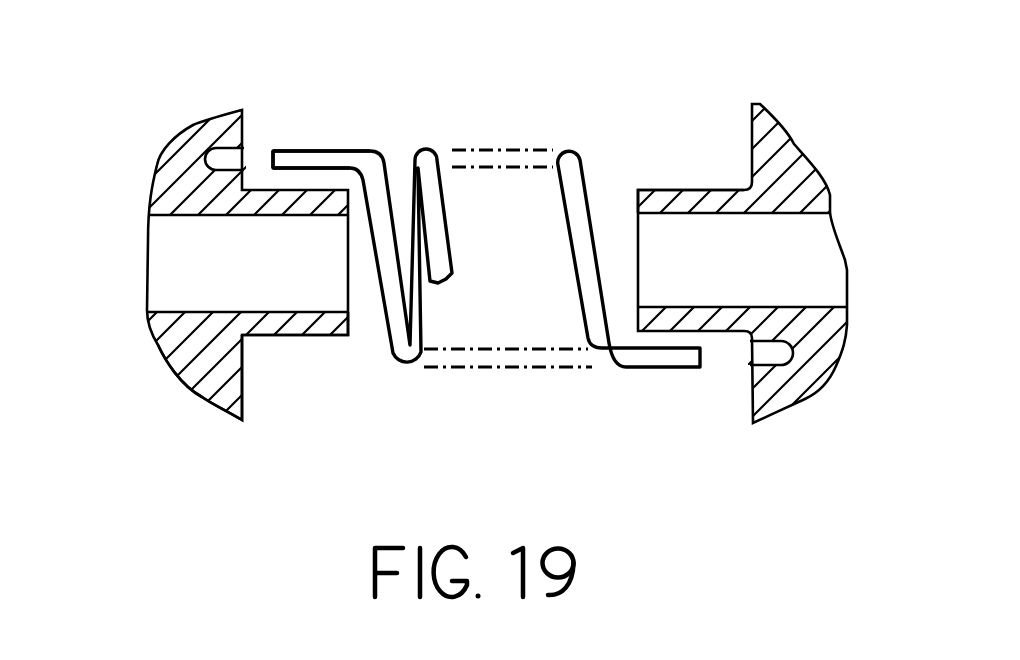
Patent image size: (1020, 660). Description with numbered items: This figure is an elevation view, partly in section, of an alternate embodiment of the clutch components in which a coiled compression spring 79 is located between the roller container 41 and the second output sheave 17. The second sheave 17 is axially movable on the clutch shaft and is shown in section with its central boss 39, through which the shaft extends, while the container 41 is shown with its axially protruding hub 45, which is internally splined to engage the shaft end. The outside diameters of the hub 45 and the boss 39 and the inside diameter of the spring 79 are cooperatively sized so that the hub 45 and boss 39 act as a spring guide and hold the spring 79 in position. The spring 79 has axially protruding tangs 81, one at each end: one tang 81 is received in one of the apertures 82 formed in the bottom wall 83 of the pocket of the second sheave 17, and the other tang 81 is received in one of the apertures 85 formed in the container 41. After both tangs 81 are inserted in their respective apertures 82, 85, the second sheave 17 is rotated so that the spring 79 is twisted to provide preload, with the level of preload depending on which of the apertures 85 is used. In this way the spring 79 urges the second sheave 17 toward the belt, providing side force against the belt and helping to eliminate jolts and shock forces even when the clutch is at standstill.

The second output sheave 17 is at (167, 142).
The central boss 39 is at (312, 335).
The roller container 41 is at (793, 145).
The hub 45 is at (700, 188).
The coiled compression spring 79 is at (396, 372).
The tangs 81 is at (313, 146).
The apertures 82 is at (245, 157).
The bottom wall 83 is at (243, 363).
The apertures 85 is at (763, 355).